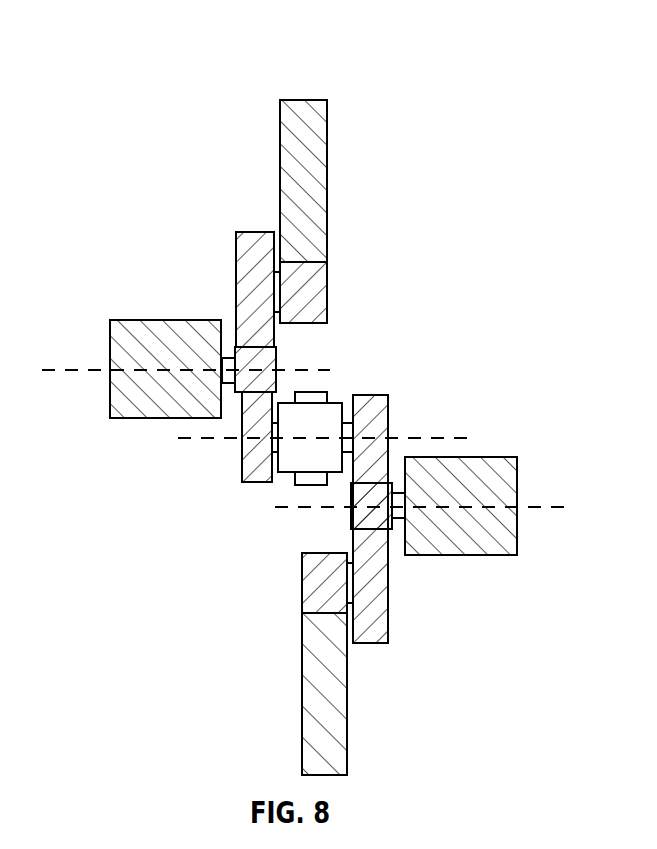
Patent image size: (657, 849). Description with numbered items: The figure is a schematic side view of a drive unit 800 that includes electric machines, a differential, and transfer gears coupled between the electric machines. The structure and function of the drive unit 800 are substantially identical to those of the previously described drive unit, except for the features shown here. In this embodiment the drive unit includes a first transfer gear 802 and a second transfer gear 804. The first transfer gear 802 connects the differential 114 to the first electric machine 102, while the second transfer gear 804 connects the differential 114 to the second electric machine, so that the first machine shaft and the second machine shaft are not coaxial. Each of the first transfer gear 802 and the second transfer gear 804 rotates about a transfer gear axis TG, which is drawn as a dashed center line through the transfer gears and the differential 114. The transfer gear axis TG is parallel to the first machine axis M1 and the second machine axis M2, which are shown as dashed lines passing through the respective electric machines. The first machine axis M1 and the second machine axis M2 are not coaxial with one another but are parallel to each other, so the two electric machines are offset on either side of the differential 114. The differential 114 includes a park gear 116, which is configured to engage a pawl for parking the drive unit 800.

The drive unit 800 is at (331, 402).
The first electric machine 102 is at (163, 308).
The differential 114 is at (336, 396).
The park gear 116 is at (294, 479).
The first transfer gear 802 is at (242, 458).
The second transfer gear 804 is at (380, 394).
The first machine axis M1 is at (65, 372).
The second machine axis M2 is at (548, 505).
The transfer gear axis TG is at (452, 437).